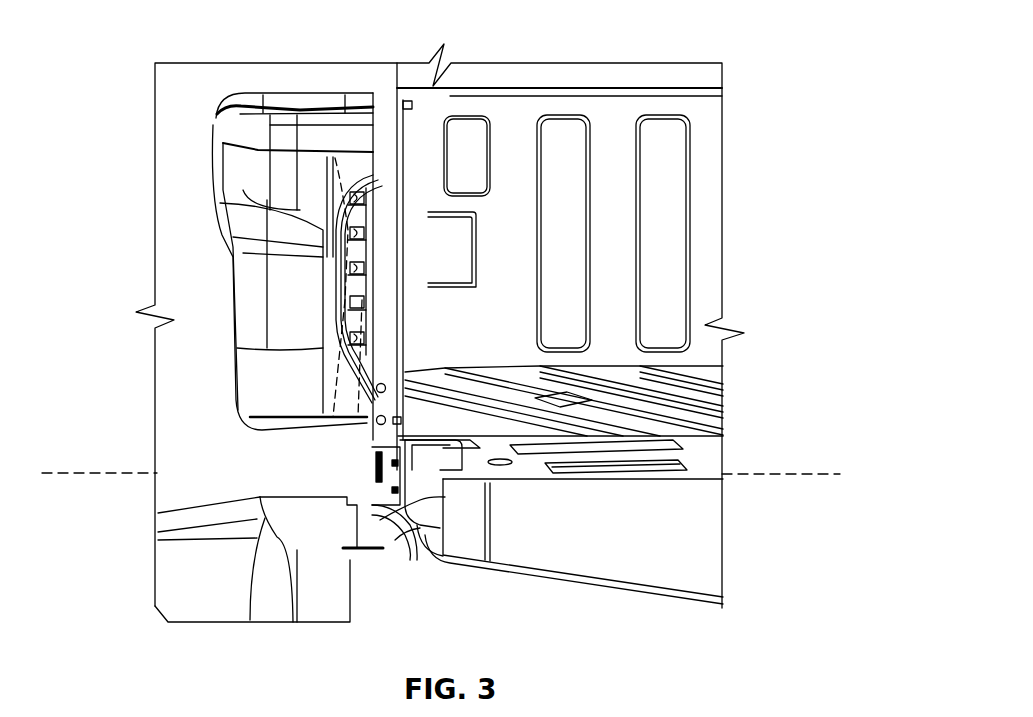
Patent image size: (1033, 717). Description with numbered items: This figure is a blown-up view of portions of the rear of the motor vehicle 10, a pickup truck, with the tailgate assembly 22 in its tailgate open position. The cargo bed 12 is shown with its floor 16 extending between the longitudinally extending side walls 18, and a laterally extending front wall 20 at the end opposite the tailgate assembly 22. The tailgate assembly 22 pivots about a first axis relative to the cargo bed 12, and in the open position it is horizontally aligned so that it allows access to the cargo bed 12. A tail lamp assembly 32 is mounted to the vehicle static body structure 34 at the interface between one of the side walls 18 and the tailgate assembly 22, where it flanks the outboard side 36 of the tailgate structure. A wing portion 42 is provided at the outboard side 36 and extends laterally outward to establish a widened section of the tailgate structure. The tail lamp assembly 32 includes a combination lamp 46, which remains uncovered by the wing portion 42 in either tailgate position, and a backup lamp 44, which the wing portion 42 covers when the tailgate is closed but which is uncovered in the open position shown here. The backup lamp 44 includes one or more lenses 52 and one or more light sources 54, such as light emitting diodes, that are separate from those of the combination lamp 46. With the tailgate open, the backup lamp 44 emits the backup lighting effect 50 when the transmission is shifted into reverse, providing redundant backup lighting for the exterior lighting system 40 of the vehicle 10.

The motor vehicle 10 is at (707, 41).
The cargo bed 12 is at (605, 233).
The floor 16 is at (595, 403).
The side walls 18 is at (383, 152).
The front wall 20 is at (670, 198).
The tailgate assembly 22 is at (556, 597).
The tail lamp assembly 32 is at (235, 230).
The vehicle static body structure 34 is at (226, 491).
The outboard side 36 is at (414, 527).
The exterior lighting system 40 is at (281, 476).
The wing portion 42 is at (400, 542).
The backup lamp 44 is at (388, 274).
The combination lamp 46 is at (285, 178).
The backup lighting effect 50 is at (345, 158).
The lenses 52 is at (355, 311).
The light sources 54 is at (359, 210).